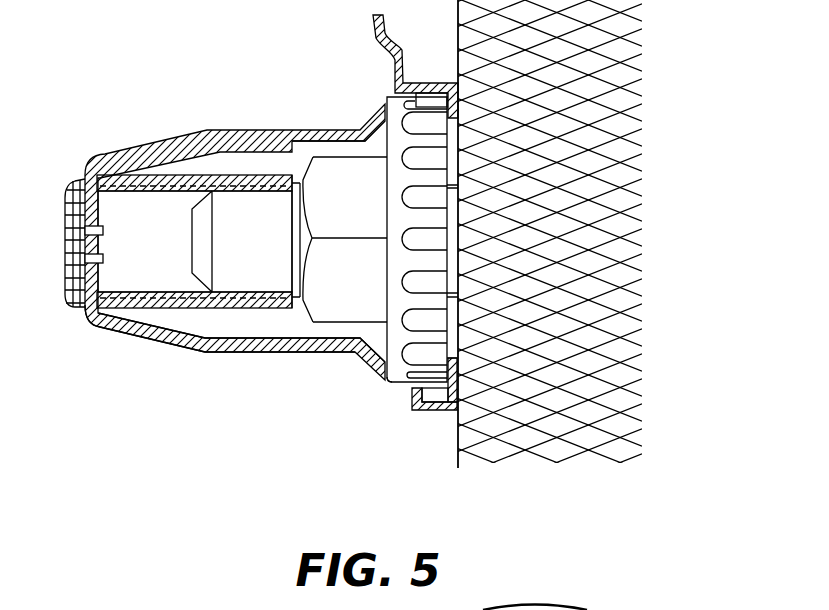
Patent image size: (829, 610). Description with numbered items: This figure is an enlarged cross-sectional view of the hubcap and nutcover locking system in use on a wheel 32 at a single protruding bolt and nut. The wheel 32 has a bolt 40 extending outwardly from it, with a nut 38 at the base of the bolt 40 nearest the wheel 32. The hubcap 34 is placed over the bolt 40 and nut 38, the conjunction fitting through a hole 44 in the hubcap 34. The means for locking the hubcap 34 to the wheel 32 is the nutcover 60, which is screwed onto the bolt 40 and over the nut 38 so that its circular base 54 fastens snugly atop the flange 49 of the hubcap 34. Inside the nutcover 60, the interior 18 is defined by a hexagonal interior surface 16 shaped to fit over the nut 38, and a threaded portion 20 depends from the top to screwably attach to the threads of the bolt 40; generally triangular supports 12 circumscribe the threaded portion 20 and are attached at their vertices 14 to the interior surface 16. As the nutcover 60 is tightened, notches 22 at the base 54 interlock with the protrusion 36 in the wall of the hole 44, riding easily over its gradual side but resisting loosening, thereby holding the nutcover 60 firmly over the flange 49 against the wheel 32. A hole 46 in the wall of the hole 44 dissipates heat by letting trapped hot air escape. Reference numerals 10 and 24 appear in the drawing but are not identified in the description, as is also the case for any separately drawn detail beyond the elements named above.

The cap assembly 10 is at (148, 352).
The supports 12 is at (222, 165).
The vertices 14 is at (292, 137).
The interior surface 16 is at (245, 327).
The interior 18 is at (342, 153).
The threaded portion 20 is at (147, 316).
The notches 22 is at (413, 147).
The cap corner 24 is at (88, 313).
The wheel 32 is at (589, 283).
The hubcap 34 is at (373, 20).
The protrusion 36 is at (430, 97).
The nut 38 is at (315, 197).
The bolt 40 is at (240, 258).
The hole 44 is at (452, 342).
The hole 46 is at (436, 398).
The flange 49 is at (457, 392).
The circular base 54 is at (387, 384).
The nutcover 60 is at (173, 343).